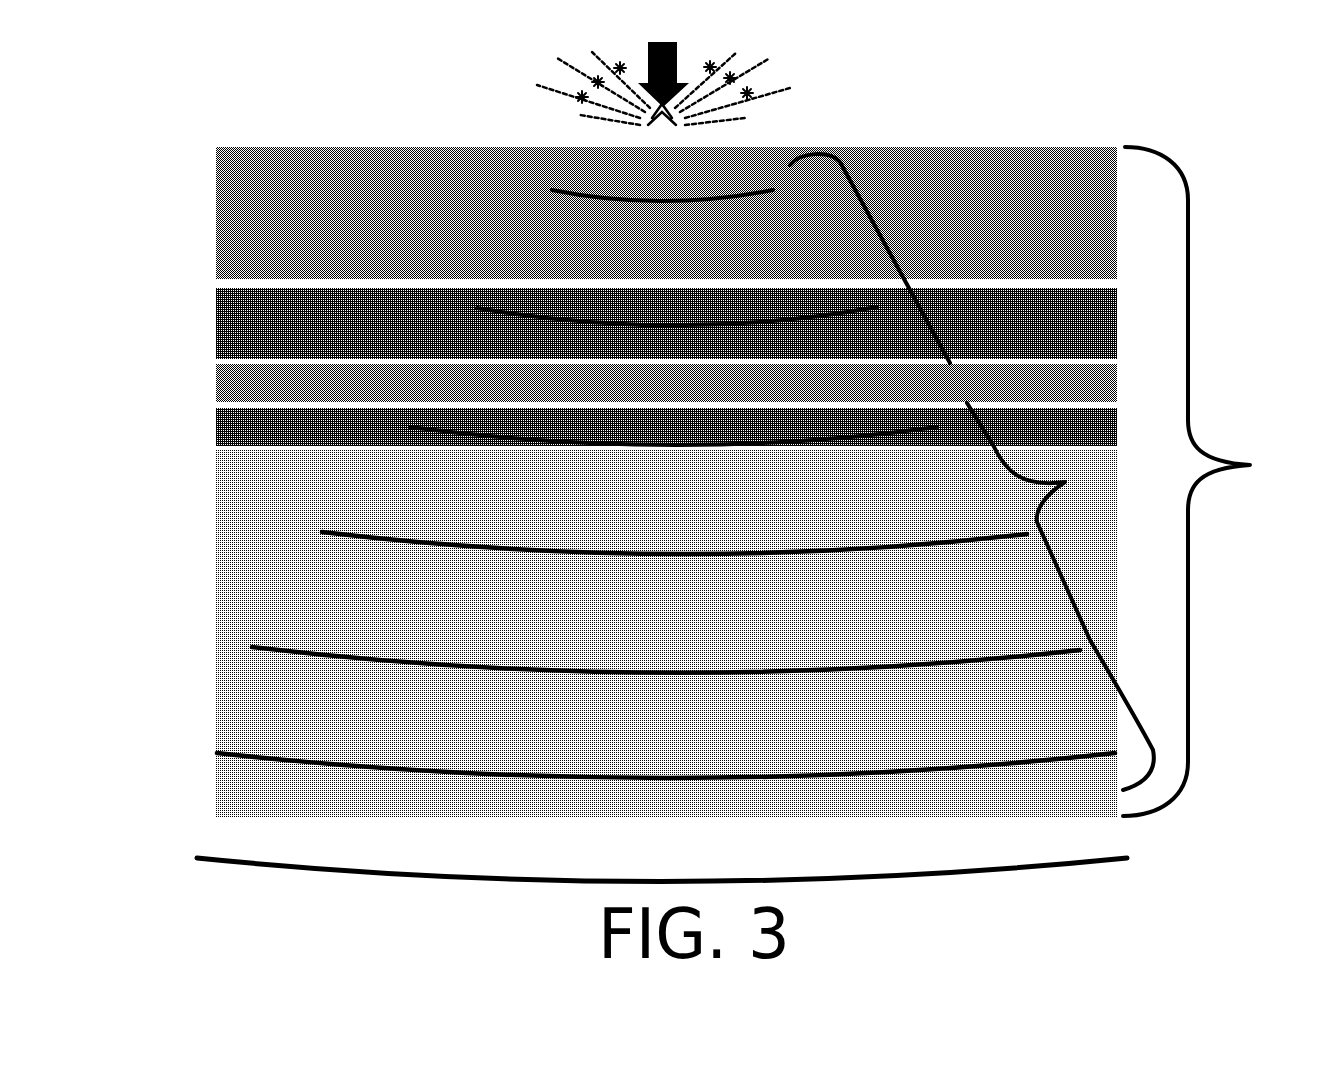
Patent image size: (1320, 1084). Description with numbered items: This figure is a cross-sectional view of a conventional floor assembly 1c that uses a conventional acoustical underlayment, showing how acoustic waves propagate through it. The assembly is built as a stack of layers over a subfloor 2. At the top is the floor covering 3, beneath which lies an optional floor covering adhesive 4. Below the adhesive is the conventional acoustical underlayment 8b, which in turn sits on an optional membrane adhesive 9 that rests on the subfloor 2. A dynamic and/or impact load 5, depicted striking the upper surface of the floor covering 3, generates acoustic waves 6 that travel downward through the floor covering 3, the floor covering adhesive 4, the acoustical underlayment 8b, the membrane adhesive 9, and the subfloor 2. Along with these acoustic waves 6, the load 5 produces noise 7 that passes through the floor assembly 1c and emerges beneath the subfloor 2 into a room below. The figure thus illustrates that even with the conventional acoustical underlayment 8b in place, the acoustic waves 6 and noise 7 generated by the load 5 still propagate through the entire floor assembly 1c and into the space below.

The floor assembly 1c is at (1221, 481).
The subfloor 2 is at (213, 532).
The floor covering 3 is at (213, 217).
The floor covering adhesive 4 is at (213, 320).
The dynamic and/or impact load 5 is at (723, 135).
The acoustic waves 6 is at (972, 472).
The noise 7 is at (177, 852).
The conventional acoustical underlayment 8b is at (213, 378).
The membrane adhesive 9 is at (213, 425).